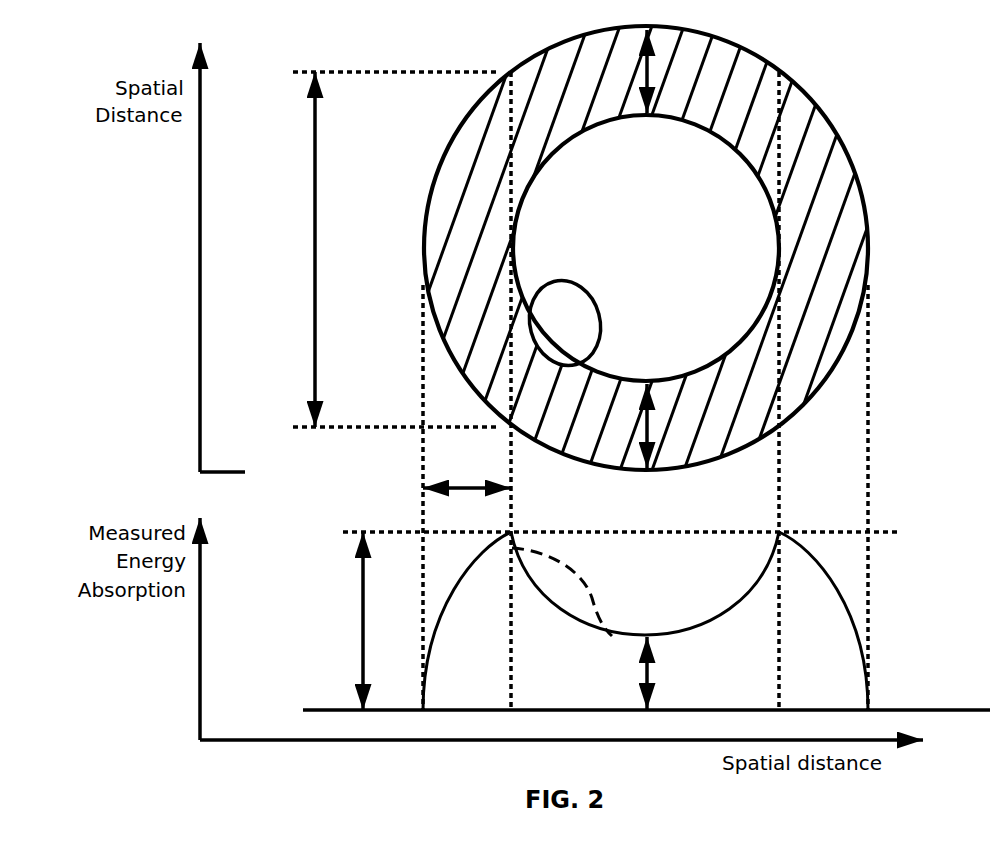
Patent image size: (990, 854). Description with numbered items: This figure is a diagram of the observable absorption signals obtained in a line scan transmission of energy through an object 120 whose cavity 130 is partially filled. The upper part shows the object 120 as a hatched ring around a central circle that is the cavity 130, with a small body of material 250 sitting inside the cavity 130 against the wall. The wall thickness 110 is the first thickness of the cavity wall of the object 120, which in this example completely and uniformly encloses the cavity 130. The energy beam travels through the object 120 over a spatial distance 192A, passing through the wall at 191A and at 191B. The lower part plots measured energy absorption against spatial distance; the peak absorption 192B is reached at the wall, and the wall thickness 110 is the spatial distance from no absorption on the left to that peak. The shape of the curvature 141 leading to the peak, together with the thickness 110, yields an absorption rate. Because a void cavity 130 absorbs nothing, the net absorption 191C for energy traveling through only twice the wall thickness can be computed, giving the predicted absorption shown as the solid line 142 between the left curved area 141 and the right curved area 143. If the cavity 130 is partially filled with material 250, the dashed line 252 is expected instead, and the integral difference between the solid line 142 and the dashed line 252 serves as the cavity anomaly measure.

The wall thickness 110 is at (463, 483).
The object 120 is at (452, 198).
The cavity 130 is at (690, 222).
The curvature of absorption leading to the peak 141 is at (466, 565).
The predicted irradiating beam of energy absorption 142 is at (624, 632).
The right curved area of absorption 143 is at (806, 549).
The upper wall traversal 191A is at (643, 78).
The lower wall traversal 191B is at (617, 477).
The net absorption for two wall thicknesses 191C is at (648, 680).
The spatial distance 192A is at (315, 137).
The measured energy absorption 192B is at (363, 628).
The material 250 is at (565, 322).
The dashed line 252 is at (595, 606).